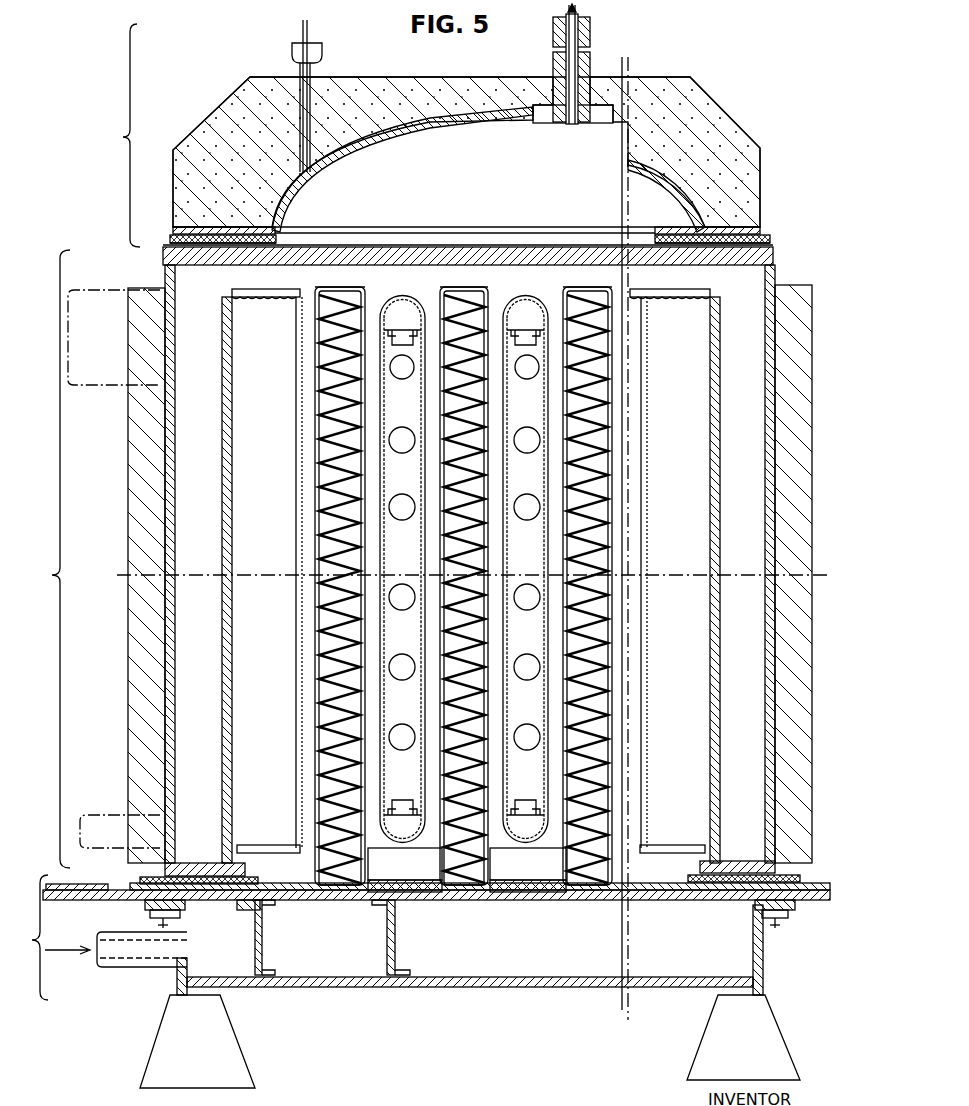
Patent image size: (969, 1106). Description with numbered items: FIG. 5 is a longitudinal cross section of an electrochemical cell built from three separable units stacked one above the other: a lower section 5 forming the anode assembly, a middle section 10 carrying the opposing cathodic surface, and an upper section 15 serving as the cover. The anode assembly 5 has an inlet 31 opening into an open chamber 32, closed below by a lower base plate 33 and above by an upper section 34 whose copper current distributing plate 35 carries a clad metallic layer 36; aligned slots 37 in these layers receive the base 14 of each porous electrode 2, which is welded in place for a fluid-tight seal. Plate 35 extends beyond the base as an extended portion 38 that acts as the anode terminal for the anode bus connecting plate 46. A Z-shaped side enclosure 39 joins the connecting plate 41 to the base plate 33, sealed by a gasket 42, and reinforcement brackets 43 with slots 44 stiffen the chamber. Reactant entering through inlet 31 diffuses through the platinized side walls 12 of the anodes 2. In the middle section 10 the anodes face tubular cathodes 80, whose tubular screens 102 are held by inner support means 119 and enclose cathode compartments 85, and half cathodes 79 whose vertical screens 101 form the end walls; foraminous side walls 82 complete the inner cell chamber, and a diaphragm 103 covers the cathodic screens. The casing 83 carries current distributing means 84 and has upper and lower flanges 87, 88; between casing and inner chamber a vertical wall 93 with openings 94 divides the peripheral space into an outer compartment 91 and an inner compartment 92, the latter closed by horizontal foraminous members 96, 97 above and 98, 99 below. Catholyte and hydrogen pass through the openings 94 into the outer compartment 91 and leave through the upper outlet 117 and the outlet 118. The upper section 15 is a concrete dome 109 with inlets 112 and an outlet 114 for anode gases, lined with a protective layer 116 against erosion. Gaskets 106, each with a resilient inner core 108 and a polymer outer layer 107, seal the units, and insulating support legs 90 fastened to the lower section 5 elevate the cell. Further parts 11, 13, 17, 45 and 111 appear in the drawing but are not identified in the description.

The electrode 2 is at (349, 250).
The lower section 5 is at (34, 937).
The middle section 10 is at (50, 559).
The zigzag baffle 11 is at (463, 589).
The side walls 12 is at (645, 404).
The column wall 13 is at (328, 288).
The base 14 is at (320, 895).
The upper section 15 is at (119, 135).
The tube 17 is at (646, 460).
The inlet 31 is at (122, 968).
The chamber 32 is at (413, 946).
The lower base plate 33 is at (452, 988).
The upper section 34 is at (812, 887).
The current distributing plate 35 is at (672, 900).
The metallic layer 36 is at (664, 880).
The slots 37 is at (348, 900).
The extended portion 38 is at (78, 900).
The side enclosure 39 is at (176, 980).
The connecting plate 41 is at (145, 906).
The gasket 42 is at (186, 910).
The reinforcement brackets 43 is at (262, 918).
The slots 44 is at (256, 946).
The bolt 45 is at (160, 923).
The anode bus connecting plate 46 is at (60, 886).
The half cathodes 79 is at (308, 262).
The tubular cathodes 80 is at (386, 300).
The vertical side walls 82 is at (380, 300).
The casing 83 is at (172, 462).
The current distributing means 84 is at (142, 503).
The cathode compartments 85 is at (464, 642).
The upper flange 87 is at (168, 256).
The lower flange 88 is at (202, 863).
The support legs 90 is at (160, 1048).
The outer compartment 91 is at (469, 540).
The inner compartment 92 is at (467, 565).
The vertical wall 93 is at (222, 640).
The openings 94 is at (222, 373).
The horizontal foraminous member 96 is at (254, 302).
The horizontal foraminous member 97 is at (400, 296).
The horizontal foraminous member 98 is at (260, 845).
The horizontal foraminous member 99 is at (400, 848).
The vertical screen 101 is at (296, 668).
The tubular screen 102 is at (544, 494).
The diaphragm 103 is at (262, 290).
The gasket 106 is at (285, 229).
The outer layer 107 is at (184, 230).
The inner core 108 is at (175, 240).
The dome 109 is at (382, 64).
The insulating concrete 111 is at (232, 106).
The inlets 112 is at (298, 70).
The outlet 114 is at (586, 34).
The protective layer 116 is at (473, 114).
The upper outlet 117 is at (100, 290).
The outlet 118 is at (98, 812).
The inner support means 119 is at (400, 345).